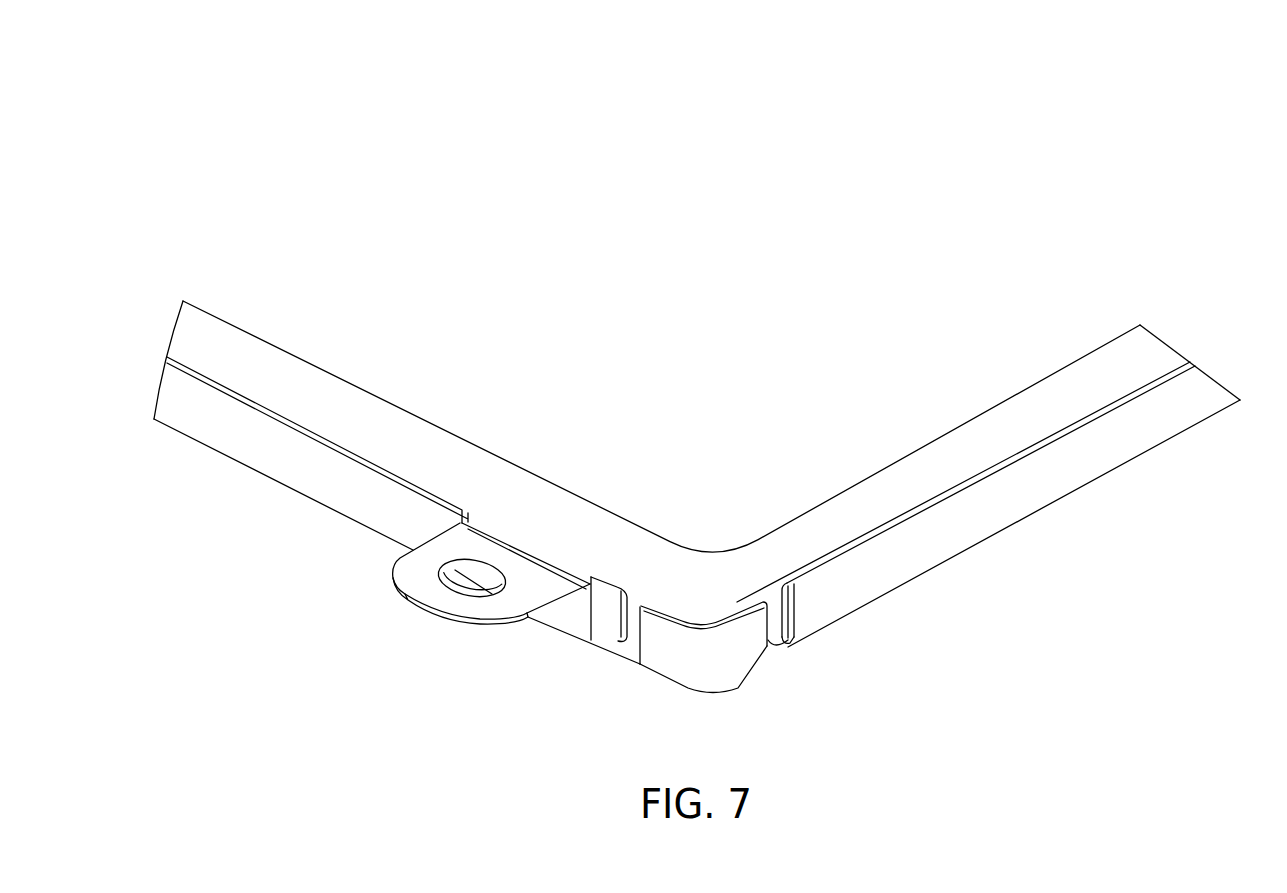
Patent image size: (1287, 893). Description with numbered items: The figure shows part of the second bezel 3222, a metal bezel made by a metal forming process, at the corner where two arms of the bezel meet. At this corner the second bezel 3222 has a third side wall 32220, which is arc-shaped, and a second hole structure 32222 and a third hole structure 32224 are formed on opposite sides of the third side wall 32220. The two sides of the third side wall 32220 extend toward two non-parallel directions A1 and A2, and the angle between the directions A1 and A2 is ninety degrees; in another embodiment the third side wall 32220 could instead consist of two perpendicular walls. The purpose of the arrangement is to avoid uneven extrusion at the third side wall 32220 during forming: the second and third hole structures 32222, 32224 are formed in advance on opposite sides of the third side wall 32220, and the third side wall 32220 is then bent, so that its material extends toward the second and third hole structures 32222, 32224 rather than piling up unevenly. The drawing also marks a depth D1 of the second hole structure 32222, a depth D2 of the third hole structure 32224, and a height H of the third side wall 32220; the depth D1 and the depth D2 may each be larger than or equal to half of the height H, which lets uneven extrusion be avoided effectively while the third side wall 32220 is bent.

The second bezel 3222 is at (1075, 117).
The third side wall 32220 is at (685, 684).
The second hole structure 32222 is at (630, 640).
The third hole structure 32224 is at (777, 637).
The direction A1 is at (785, 576).
The direction A2 is at (616, 576).
The depth of the second hole structure D1 is at (612, 592).
The depth of the third hole structure D2 is at (798, 590).
The height of the third side wall H is at (713, 627).